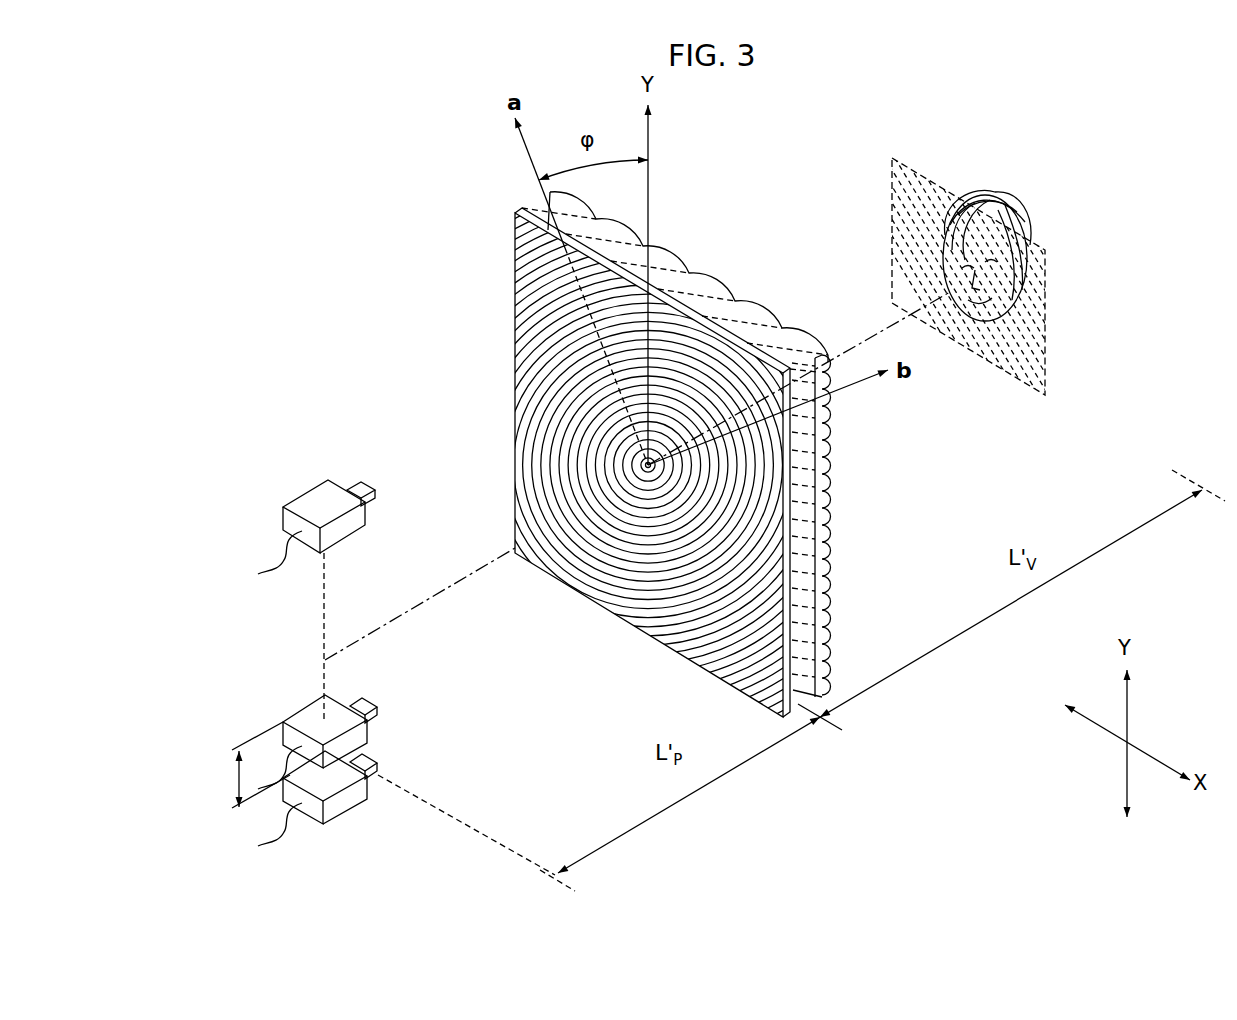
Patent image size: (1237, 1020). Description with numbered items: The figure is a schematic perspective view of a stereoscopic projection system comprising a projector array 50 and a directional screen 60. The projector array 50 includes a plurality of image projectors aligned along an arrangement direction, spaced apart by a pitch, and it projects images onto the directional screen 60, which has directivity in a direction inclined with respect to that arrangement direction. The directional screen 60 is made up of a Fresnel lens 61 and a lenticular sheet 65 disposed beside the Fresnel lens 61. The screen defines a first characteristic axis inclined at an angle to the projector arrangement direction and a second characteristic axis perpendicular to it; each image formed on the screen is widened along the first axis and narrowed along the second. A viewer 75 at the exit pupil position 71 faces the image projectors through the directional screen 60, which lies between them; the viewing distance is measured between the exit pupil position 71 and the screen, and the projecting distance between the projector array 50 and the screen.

The projector array 50 is at (343, 455).
The directional screen 60 is at (492, 190).
The Fresnel lens 61 is at (683, 615).
The lenticular sheet 65 is at (835, 489).
The exit pupil position 71 is at (913, 172).
The viewer 75 is at (997, 198).